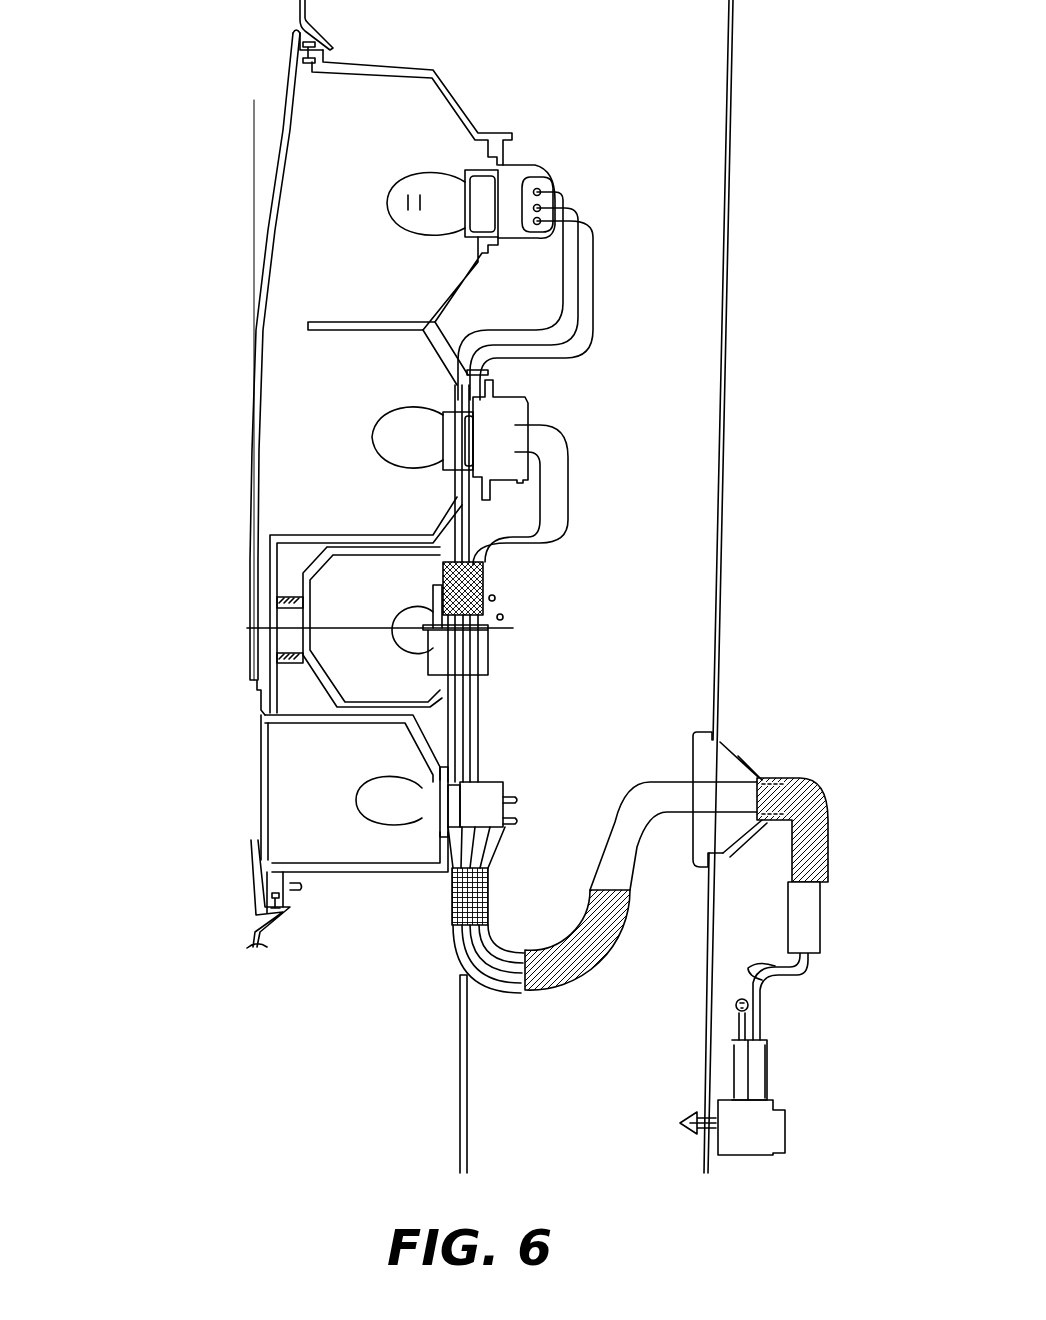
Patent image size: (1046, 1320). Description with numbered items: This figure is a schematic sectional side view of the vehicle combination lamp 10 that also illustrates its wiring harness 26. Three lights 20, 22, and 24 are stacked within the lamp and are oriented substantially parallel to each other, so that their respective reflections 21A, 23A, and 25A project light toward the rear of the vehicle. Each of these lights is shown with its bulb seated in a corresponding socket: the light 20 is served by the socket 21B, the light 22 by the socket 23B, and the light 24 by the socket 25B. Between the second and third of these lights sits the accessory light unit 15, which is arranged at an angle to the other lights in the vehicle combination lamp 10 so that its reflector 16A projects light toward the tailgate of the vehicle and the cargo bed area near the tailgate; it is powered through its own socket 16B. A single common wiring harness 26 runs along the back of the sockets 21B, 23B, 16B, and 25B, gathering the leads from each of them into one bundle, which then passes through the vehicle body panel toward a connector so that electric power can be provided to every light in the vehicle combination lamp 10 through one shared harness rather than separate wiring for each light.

The vehicle combination lamp 10 is at (159, 890).
The accessory light unit 15 is at (231, 631).
The reflector 16A is at (405, 612).
The socket 16B is at (488, 624).
The light 20 is at (248, 200).
The reflection 21A is at (405, 205).
The socket 21B is at (548, 178).
The light 22 is at (231, 411).
The reflection 23A is at (385, 442).
The socket 23B is at (513, 405).
The light 24 is at (241, 758).
The reflection 25A is at (377, 800).
The socket 25B is at (500, 783).
The wiring harness 26 is at (510, 990).